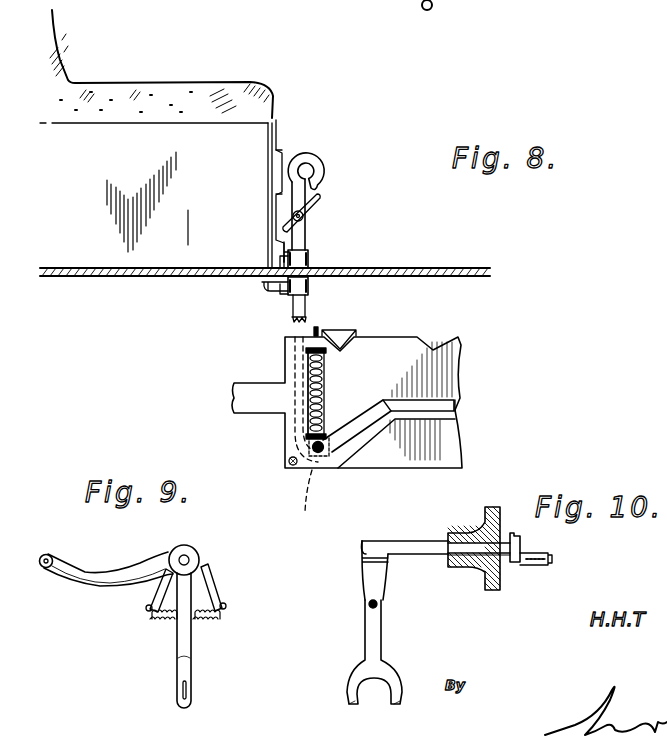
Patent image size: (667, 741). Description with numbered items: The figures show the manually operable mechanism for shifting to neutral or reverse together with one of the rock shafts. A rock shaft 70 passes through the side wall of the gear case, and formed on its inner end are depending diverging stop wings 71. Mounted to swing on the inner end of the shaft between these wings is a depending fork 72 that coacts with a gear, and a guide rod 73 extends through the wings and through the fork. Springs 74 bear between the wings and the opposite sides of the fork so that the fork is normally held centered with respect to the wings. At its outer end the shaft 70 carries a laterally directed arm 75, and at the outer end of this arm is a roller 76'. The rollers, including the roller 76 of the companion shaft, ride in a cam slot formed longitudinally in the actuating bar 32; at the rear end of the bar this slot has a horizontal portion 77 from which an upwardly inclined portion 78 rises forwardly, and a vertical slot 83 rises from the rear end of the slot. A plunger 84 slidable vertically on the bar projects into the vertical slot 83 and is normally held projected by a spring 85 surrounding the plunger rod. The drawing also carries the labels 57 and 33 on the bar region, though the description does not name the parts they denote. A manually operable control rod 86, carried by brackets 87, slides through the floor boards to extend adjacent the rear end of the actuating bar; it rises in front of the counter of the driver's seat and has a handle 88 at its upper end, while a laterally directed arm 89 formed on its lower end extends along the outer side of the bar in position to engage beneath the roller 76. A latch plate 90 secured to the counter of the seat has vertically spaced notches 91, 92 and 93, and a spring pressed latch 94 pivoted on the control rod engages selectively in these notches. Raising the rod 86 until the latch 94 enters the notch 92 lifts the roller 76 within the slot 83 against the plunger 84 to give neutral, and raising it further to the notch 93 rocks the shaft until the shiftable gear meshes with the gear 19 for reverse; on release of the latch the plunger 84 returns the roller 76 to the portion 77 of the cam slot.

In FIG. 8, the latch plate 90 is at (281, 153).
In FIG. 8, the notch 93 is at (281, 151).
In FIG. 8, the notch 92 is at (281, 196).
In FIG. 8, the notch 91 is at (291, 232).
In FIG. 8, the handle 88 is at (314, 160).
In FIG. 8, the spring pressed latch 94 is at (322, 200).
In FIG. 8, the brackets 87 is at (310, 262).
In FIG. 8, the manually operable control rod 86 is at (293, 320).
In FIG. 8, the laterally directed arm 89 is at (300, 499).
In FIG. 8, the actuating bar 32 is at (444, 350).
In FIG. 8, the notched lug 57 is at (343, 332).
In FIG. 8, the spring 85 is at (323, 400).
In FIG. 8, the vertical slot 83 is at (338, 363).
In FIG. 8, the plunger 84 is at (326, 437).
In FIG. 8, the upwardly inclined portion 78 is at (366, 421).
In FIG. 8, the horizontal portion 77 is at (330, 453).
In FIG. 8, the roller 76 is at (280, 441).
In FIG. 8, the screw 33 is at (288, 467).
In FIG. 8, the gear 19 is at (461, 408).
In FIG. 9, the laterally directed arm 75 is at (85, 578).
In FIG. 10, the laterally directed arm 75 is at (518, 563).
In FIG. 9, the depending fork 72 is at (191, 655).
In FIG. 10, the depending fork 72 is at (378, 637).
In FIG. 9, the stop wings 71 is at (211, 592).
In FIG. 10, the stop wings 71 is at (378, 582).
In FIG. 9, the springs 74 is at (212, 620).
In FIG. 9, the guide rod 73 is at (226, 606).
In FIG. 10, the guide rod 73 is at (369, 603).
In FIG. 10, the rock shaft 70 is at (414, 547).
In FIG. 10, the roller 76' is at (541, 566).